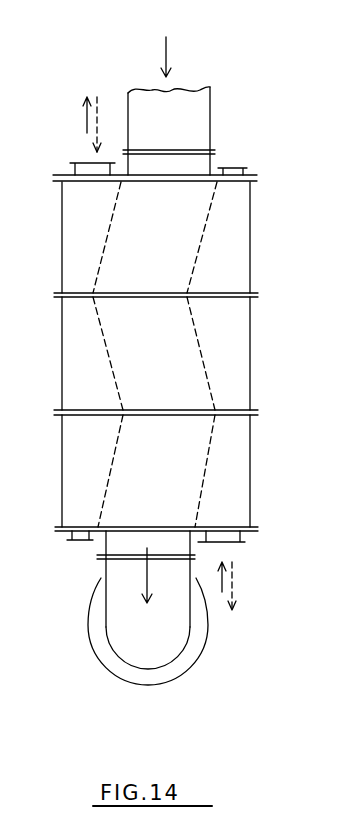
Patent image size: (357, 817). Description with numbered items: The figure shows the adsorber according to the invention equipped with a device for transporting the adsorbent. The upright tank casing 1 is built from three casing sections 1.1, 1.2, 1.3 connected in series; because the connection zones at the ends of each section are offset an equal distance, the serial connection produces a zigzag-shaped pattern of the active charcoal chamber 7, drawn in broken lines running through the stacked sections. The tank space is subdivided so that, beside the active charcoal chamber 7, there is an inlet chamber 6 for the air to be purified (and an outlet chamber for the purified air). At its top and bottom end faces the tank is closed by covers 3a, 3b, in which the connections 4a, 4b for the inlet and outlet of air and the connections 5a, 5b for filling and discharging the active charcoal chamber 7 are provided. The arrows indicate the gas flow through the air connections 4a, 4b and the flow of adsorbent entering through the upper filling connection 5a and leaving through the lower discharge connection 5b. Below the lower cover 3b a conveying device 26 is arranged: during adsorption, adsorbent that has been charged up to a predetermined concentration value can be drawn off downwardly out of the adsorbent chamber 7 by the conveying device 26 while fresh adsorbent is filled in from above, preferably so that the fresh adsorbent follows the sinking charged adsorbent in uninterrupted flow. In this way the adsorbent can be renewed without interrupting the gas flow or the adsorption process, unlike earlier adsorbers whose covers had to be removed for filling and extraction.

The tank casing 1 is at (140, 354).
The casing section 1.1 is at (62, 245).
The casing section 1.2 is at (62, 345).
The casing section 1.3 is at (62, 493).
The cover 3a is at (63, 173).
The cover 3b is at (247, 533).
The connection 4a is at (83, 169).
The connection 4b is at (233, 538).
The connection 5a is at (200, 166).
The connection 5b is at (112, 538).
The inlet chamber 6 is at (77, 270).
The active charcoal chamber 7 is at (188, 227).
The conveying device 26 is at (210, 647).